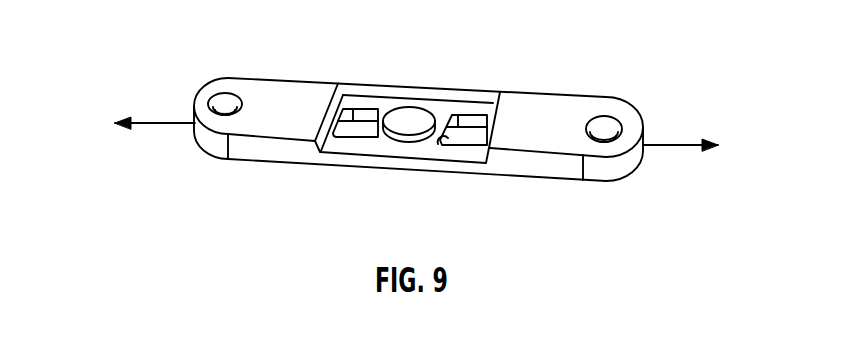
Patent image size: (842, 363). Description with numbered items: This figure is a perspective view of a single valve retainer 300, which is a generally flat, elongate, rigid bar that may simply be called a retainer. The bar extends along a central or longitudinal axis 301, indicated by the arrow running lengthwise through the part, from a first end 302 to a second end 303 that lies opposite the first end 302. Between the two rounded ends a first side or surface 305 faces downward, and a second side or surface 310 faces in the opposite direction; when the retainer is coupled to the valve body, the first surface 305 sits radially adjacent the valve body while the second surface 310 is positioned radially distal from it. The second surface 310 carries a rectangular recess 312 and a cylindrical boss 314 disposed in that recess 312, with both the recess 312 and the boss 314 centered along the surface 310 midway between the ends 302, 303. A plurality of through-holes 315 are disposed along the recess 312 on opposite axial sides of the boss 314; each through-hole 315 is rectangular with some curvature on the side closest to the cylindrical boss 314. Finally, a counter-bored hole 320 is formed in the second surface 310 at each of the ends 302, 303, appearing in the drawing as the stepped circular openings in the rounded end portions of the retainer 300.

The valve retainer 300 is at (297, 87).
The central or longitudinal axis 301 is at (153, 122).
The first end 302 is at (205, 150).
The second end 303 is at (612, 110).
The first side or surface 305 is at (330, 170).
The second side or surface 310 is at (528, 108).
The rectangular recess 312 is at (463, 110).
The cylindrical boss 314 is at (410, 120).
The through-holes 315 is at (365, 110).
The counter-bored hole 320 is at (218, 100).